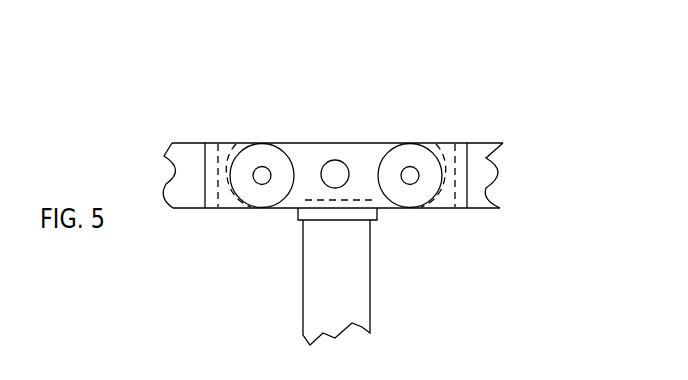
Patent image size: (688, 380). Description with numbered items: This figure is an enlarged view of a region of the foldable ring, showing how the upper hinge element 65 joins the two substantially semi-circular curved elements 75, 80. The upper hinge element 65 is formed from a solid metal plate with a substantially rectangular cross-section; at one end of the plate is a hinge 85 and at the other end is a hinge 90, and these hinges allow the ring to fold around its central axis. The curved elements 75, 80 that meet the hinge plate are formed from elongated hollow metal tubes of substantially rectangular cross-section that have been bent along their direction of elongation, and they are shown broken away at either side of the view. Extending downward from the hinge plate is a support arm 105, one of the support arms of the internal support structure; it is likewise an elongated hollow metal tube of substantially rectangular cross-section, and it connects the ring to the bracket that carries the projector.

The upper hinge element 65 is at (338, 142).
The curved element 75 is at (197, 168).
The curved element 80 is at (485, 152).
The hinge 85 is at (238, 148).
The hinge 90 is at (435, 146).
The support arm 105 is at (337, 293).